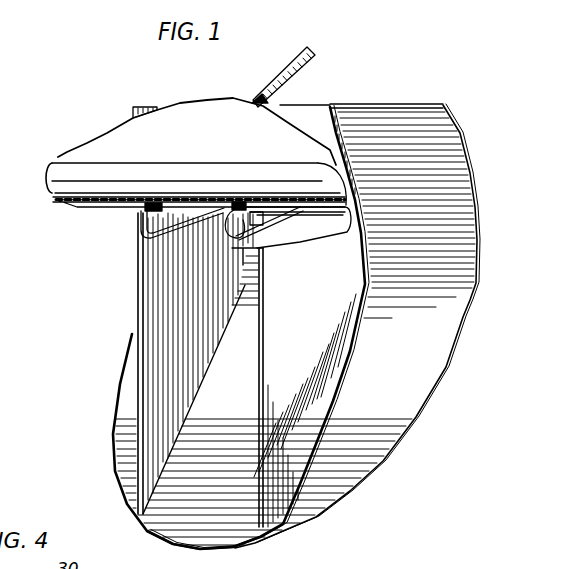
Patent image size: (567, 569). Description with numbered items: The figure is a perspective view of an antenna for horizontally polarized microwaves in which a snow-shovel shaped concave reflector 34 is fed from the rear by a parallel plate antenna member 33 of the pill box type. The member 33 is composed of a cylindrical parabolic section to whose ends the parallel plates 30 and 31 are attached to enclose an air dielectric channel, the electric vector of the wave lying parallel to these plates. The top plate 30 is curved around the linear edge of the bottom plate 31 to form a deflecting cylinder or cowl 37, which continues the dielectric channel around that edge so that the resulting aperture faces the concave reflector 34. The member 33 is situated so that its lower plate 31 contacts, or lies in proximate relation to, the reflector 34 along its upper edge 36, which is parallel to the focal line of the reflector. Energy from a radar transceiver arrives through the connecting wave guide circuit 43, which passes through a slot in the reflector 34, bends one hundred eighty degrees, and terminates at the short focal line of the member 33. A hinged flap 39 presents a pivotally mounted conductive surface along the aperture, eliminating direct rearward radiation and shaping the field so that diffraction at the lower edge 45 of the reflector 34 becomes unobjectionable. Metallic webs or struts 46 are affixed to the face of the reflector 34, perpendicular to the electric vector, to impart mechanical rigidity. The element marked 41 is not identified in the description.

The parallel plate 30 is at (178, 139).
The lower plate 31 is at (315, 117).
The parallel plate antenna member 33 is at (197, 122).
The concave reflector 34 is at (314, 322).
The edge 36 is at (383, 107).
The cowl 37 is at (50, 173).
The hinged flap 39 is at (348, 237).
The hook 41 is at (183, 228).
The connecting wave guide circuit 43 is at (284, 72).
The lower edge 45 is at (219, 544).
The metallic webs 46 is at (270, 364).